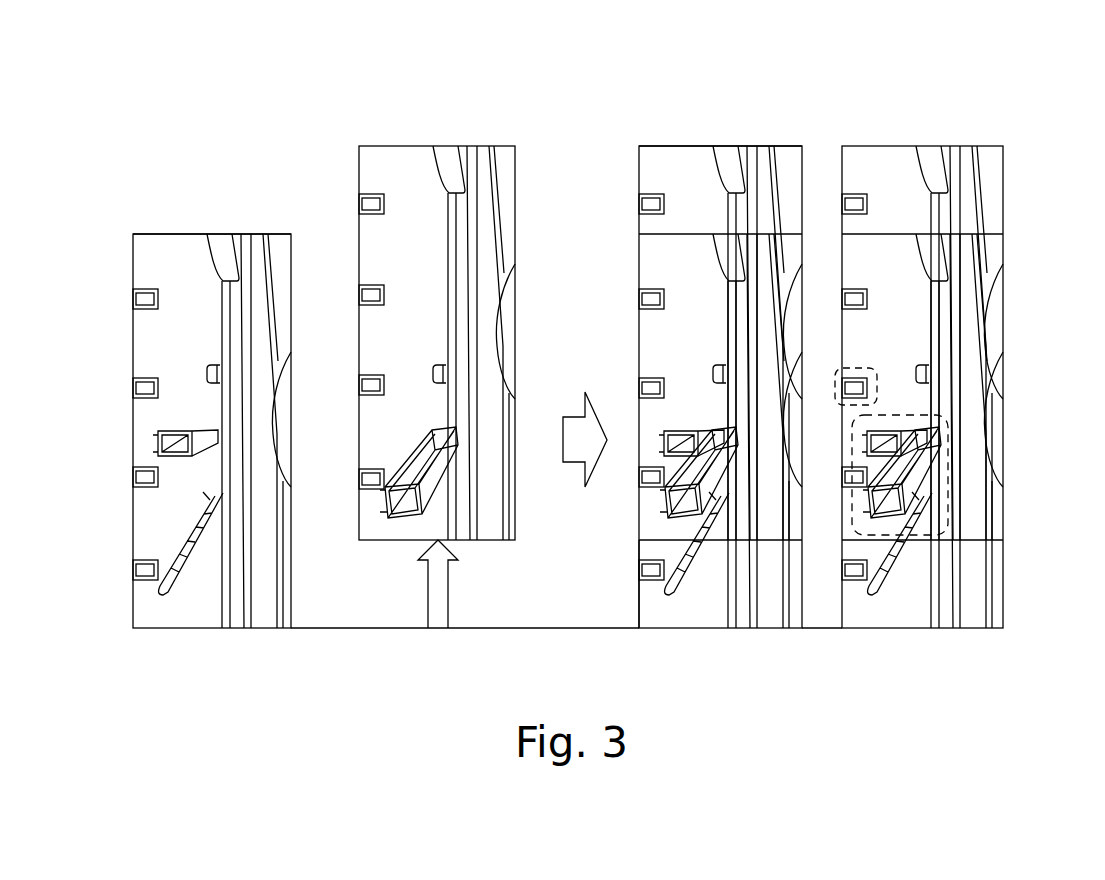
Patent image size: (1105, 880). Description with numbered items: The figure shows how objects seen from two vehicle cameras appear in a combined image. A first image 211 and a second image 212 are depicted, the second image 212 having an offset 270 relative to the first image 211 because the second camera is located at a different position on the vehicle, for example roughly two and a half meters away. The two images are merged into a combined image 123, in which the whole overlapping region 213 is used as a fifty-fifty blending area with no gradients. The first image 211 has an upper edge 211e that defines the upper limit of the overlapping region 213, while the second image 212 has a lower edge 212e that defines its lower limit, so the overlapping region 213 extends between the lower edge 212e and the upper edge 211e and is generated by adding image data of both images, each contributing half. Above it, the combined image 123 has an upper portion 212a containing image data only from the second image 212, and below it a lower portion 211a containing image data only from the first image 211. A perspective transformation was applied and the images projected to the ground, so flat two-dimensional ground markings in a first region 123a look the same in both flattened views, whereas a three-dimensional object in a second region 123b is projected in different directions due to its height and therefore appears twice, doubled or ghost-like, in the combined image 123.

The first image 211 is at (146, 152).
The upper edge 211e is at (193, 234).
The lower portion 211a is at (636, 610).
The second image 212 is at (418, 128).
The upper portion 212a is at (620, 158).
The lower edge 212e is at (636, 548).
The overlapping region 213 is at (620, 334).
The combined image 123 is at (735, 130).
The first region 123a is at (877, 370).
The second region 123b is at (950, 483).
The offset 270 is at (433, 608).